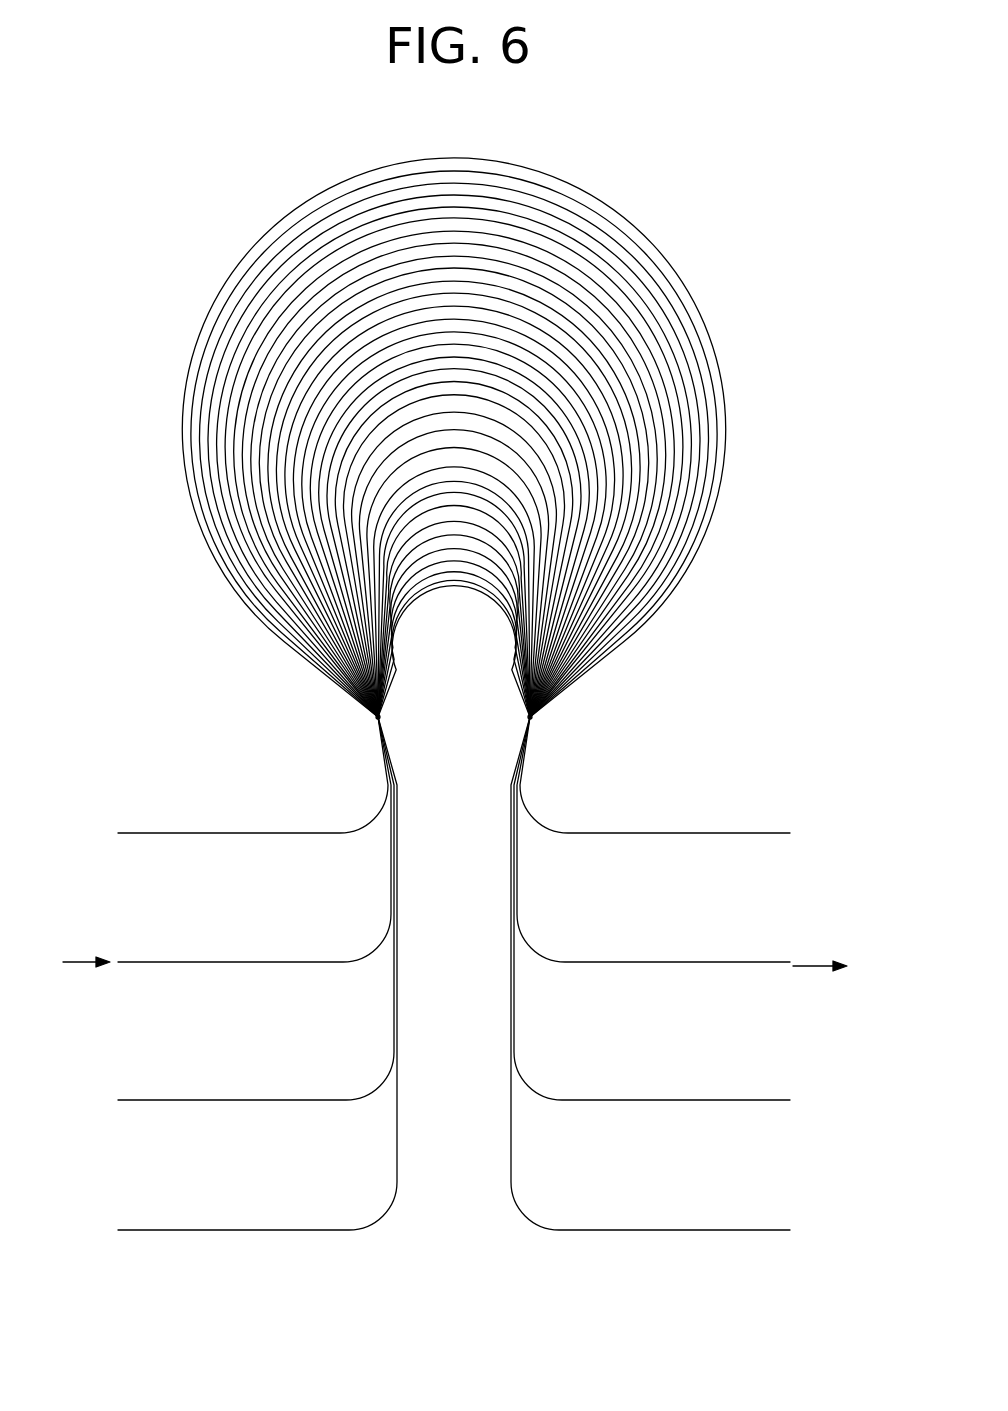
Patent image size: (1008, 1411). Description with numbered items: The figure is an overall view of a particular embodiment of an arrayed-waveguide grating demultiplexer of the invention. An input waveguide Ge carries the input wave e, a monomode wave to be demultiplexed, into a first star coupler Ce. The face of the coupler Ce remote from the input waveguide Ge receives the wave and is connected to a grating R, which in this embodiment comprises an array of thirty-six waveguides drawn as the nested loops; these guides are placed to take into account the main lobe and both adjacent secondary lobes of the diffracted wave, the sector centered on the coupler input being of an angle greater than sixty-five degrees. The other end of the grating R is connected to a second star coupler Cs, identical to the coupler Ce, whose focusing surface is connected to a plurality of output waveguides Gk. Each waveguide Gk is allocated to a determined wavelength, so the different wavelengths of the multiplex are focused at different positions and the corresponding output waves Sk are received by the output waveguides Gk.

The grating R is at (213, 286).
The first star coupler Ce is at (343, 689).
The second star coupler Cs is at (563, 691).
The input waveguide Ge is at (251, 962).
The output waveguides Gk is at (698, 962).
The input wave e is at (75, 962).
The output waves Sk is at (815, 966).